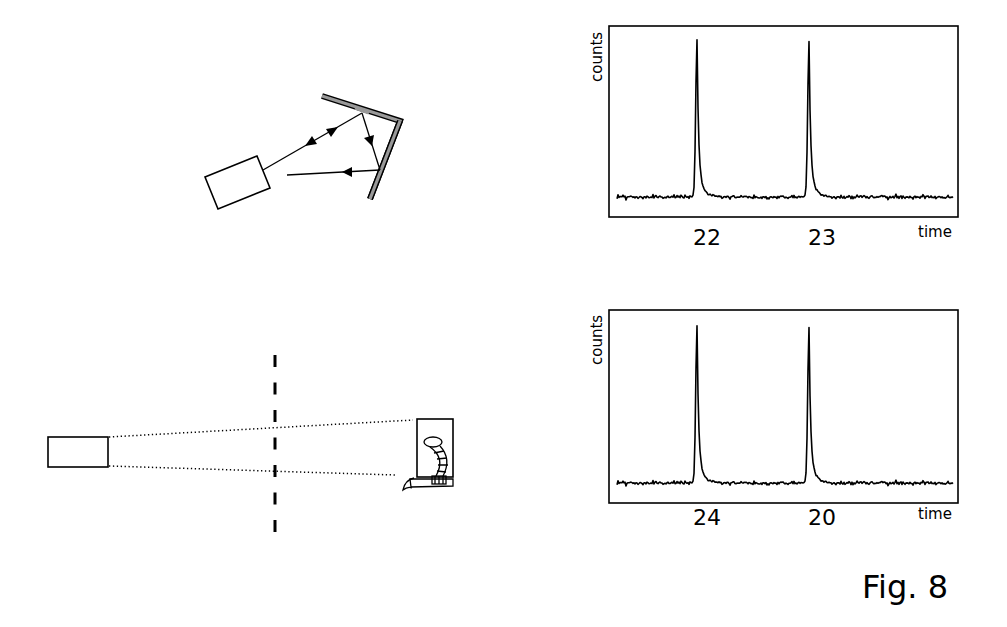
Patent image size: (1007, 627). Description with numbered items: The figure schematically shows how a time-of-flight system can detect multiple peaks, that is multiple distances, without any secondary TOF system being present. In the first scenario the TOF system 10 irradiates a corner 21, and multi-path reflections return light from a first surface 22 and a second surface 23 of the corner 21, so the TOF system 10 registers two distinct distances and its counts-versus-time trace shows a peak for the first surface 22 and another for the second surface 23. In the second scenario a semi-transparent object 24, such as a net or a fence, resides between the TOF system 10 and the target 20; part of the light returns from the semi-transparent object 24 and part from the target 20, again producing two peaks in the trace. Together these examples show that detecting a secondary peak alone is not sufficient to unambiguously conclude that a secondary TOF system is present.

The TOF system 10 is at (224, 163).
The target 20 is at (457, 422).
The corner 21 is at (341, 92).
The first surface 22 is at (363, 104).
The second surface 23 is at (388, 184).
The semi-transparent object 24 is at (281, 537).